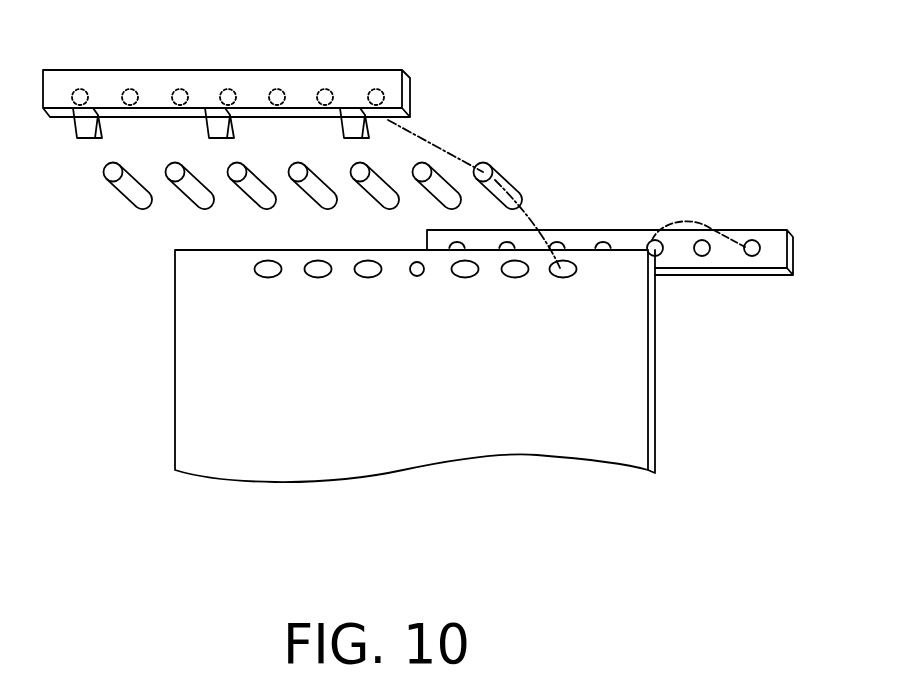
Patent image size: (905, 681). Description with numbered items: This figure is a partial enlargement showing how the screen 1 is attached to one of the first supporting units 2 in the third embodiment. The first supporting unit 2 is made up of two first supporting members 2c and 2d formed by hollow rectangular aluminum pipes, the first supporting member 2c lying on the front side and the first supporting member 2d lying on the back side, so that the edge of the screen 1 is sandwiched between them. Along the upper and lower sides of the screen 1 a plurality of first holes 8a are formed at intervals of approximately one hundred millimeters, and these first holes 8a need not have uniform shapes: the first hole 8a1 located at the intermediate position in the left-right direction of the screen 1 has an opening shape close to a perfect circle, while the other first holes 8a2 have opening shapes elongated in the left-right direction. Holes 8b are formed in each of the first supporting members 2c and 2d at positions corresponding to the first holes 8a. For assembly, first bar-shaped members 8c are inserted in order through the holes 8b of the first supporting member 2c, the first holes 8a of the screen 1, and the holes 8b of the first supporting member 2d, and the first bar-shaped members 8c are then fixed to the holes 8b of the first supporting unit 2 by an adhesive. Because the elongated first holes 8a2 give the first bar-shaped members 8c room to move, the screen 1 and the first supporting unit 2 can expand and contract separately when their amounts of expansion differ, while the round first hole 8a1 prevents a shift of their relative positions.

The screen 1 is at (407, 453).
The first supporting unit 2 is at (557, 73).
The first supporting member 2c is at (558, 245).
The first supporting member 2d is at (410, 94).
The first hole 8a is at (553, 355).
The first hole 8a1 is at (417, 277).
The first hole 8a2 is at (268, 278).
The hole 8b is at (372, 88).
The first bar-shaped member 8c is at (190, 192).